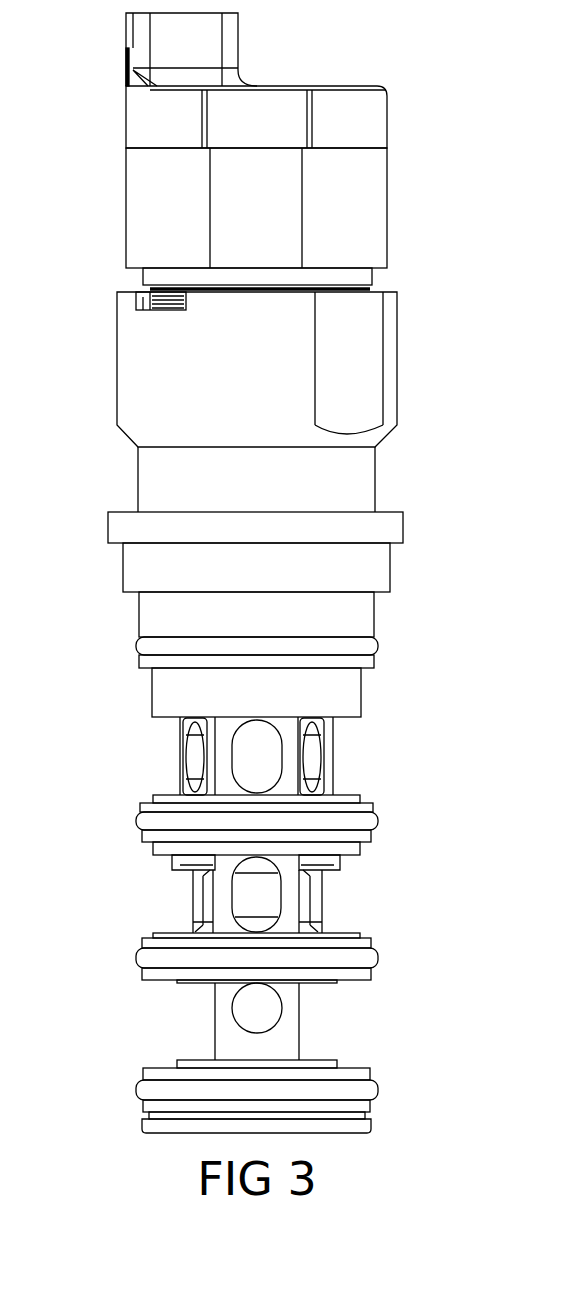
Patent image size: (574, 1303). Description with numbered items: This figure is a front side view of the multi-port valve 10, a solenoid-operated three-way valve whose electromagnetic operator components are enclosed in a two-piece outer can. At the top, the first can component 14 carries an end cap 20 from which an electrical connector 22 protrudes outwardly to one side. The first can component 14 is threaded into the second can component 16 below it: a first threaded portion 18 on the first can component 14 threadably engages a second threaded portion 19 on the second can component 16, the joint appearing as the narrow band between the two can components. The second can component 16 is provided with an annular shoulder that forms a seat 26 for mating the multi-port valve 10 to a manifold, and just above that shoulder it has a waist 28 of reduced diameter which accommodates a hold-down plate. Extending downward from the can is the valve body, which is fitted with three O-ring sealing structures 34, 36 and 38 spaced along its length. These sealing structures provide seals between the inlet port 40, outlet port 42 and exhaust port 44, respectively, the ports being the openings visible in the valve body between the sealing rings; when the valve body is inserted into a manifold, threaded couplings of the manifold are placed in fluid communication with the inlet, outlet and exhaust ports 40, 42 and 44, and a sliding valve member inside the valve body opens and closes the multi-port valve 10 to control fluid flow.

The multi-port valve 10 is at (460, 331).
The first can component 14 is at (372, 190).
The second can component 16 is at (393, 425).
The first threaded portion 18 is at (150, 295).
The second threaded portion 19 is at (143, 303).
The end cap 20 is at (343, 108).
The electrical connector 22 is at (208, 45).
The seat 26 is at (120, 527).
The waist 28 is at (413, 447).
The O-ring sealing structure 34 is at (377, 822).
The O-ring sealing structure 36 is at (377, 960).
The O-ring sealing structure 38 is at (377, 1090).
The inlet port 40 is at (270, 1008).
The outlet port 42 is at (270, 893).
The exhaust port 44 is at (270, 757).